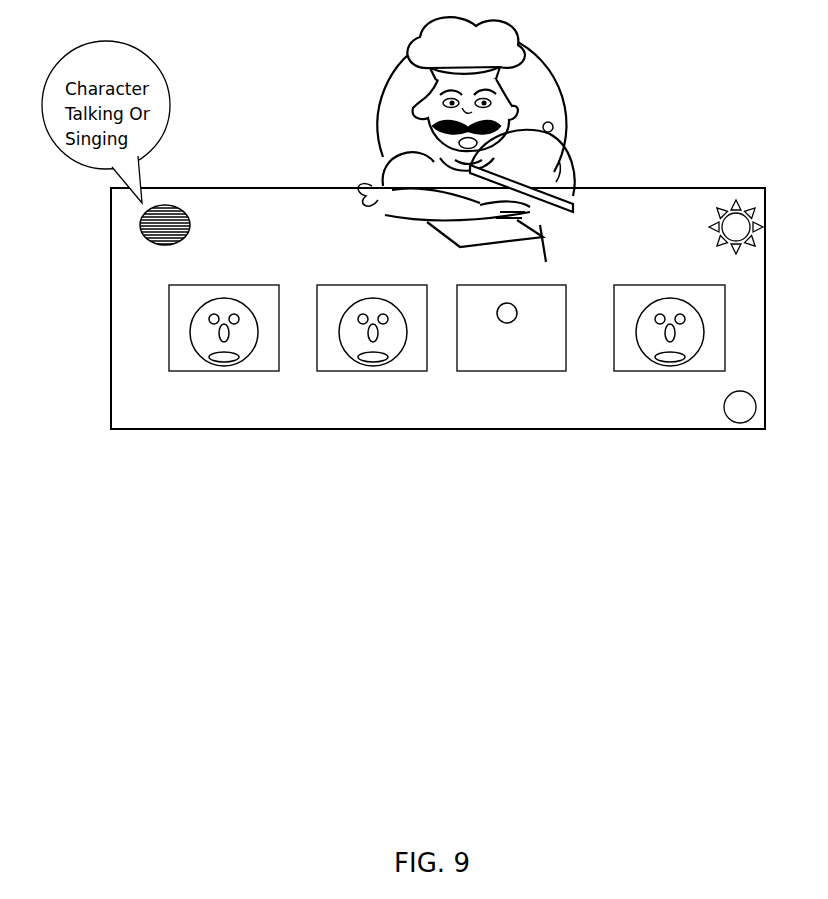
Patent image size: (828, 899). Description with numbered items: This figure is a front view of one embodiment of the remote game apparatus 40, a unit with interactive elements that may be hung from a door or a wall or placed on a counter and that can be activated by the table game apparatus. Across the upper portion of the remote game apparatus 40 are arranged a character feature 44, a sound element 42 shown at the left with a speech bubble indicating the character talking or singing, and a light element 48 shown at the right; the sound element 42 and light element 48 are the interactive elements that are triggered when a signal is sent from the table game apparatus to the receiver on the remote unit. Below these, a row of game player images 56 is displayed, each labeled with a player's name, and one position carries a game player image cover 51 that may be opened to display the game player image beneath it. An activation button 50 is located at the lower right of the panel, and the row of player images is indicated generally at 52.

The remote game apparatus 40 is at (288, 170).
The sound element 42 is at (176, 215).
The character feature 44 is at (497, 50).
The light element 48 is at (735, 226).
The activation button 50 is at (736, 400).
The game player image cover 51 is at (485, 332).
The family member selection row 52 is at (289, 520).
The game player images 56 is at (259, 353).